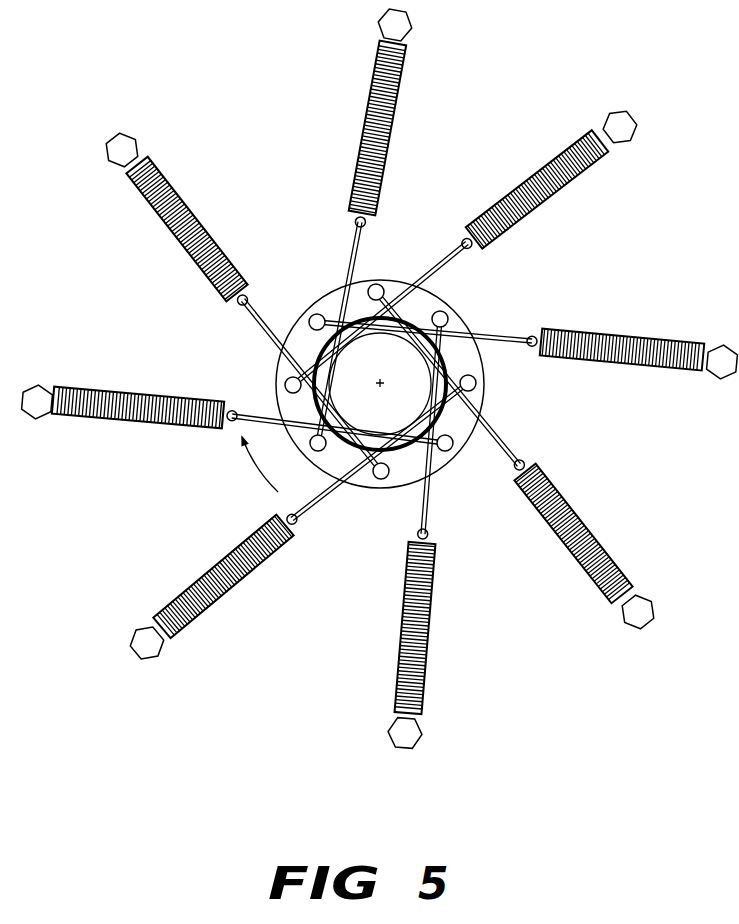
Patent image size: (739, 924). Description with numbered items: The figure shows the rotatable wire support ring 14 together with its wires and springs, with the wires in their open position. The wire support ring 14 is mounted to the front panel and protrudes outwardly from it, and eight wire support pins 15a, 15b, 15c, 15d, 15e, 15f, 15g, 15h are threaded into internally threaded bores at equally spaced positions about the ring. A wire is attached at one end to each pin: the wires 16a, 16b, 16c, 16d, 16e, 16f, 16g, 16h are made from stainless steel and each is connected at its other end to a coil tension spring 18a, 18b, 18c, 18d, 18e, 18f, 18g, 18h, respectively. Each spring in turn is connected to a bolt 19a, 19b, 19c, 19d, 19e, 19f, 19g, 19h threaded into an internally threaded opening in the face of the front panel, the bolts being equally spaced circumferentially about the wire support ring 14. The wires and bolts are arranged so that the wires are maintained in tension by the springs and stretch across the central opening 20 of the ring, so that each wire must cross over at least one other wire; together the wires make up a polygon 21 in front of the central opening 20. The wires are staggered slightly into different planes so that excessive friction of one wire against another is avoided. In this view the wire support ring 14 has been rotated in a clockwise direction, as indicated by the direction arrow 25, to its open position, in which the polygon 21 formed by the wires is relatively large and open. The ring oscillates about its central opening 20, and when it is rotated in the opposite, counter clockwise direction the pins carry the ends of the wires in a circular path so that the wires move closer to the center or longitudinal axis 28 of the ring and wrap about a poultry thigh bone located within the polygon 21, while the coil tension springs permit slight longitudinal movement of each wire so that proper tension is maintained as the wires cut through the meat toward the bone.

The rotatable wire support ring 14 is at (461, 451).
The wire support pin 15a is at (285, 387).
The wire support pin 15b is at (311, 316).
The wire support pin 15c is at (376, 284).
The wire support pin 15d is at (446, 312).
The wire support pin 15e is at (477, 385).
The wire support pin 15f is at (446, 452).
The wire support pin 15g is at (383, 480).
The wire support pin 15h is at (312, 450).
The wire 16a is at (450, 257).
The wire 16b is at (510, 337).
The wire 16c is at (506, 443).
The wire 16d is at (430, 518).
The wire 16e is at (318, 506).
The wire 16f is at (253, 421).
The wire 16g is at (258, 323).
The wire 16h is at (347, 270).
The coil tension spring 18a is at (530, 214).
The coil tension spring 18b is at (600, 362).
The coil tension spring 18c is at (547, 523).
The coil tension spring 18d is at (400, 645).
The coil tension spring 18e is at (212, 567).
The coil tension spring 18f is at (157, 398).
The coil tension spring 18g is at (207, 228).
The coil tension spring 18h is at (400, 88).
The bolt 19a is at (614, 117).
The bolt 19b is at (718, 352).
The bolt 19c is at (640, 608).
The bolt 19d is at (413, 735).
The bolt 19e is at (150, 657).
The bolt 19f is at (40, 408).
The bolt 19g is at (113, 157).
The bolt 19h is at (385, 26).
The central opening 20 is at (411, 410).
The polygon 21 is at (389, 337).
The direction arrow 25 is at (255, 465).
The longitudinal axis 28 is at (377, 381).